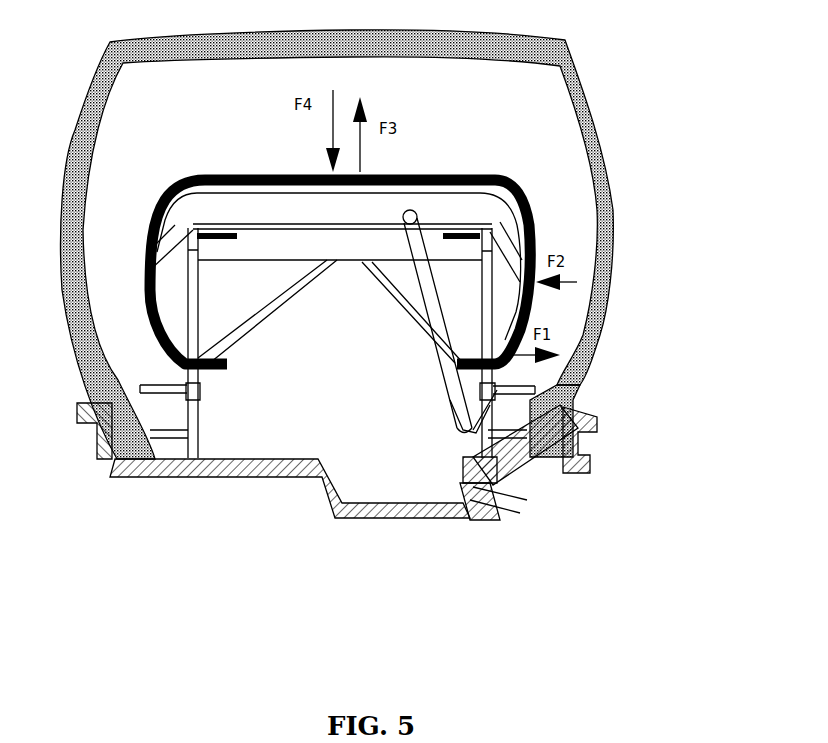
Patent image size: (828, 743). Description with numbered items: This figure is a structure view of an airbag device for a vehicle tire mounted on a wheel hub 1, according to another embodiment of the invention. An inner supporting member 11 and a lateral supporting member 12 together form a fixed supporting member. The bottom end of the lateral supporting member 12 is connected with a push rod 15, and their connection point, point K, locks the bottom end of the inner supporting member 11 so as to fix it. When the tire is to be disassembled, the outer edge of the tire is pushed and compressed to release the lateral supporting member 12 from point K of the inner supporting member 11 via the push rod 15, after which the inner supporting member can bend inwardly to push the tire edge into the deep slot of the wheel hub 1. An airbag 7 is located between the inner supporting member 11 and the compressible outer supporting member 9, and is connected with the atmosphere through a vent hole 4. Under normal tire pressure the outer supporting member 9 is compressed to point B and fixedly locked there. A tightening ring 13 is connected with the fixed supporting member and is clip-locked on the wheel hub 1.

The wheel hub 1 is at (472, 518).
The vent hole 4 is at (557, 400).
The airbag 7 is at (505, 180).
The outer supporting member 9 is at (497, 232).
The inner supporting member 11 is at (470, 355).
The lateral supporting member 12 is at (417, 330).
The tightening ring 13 is at (520, 203).
The push rod 15 is at (80, 330).